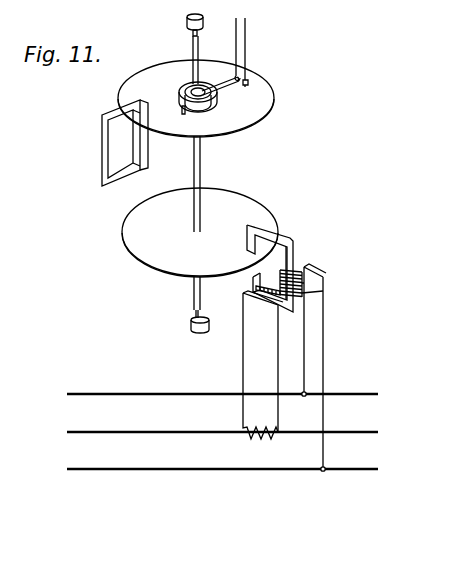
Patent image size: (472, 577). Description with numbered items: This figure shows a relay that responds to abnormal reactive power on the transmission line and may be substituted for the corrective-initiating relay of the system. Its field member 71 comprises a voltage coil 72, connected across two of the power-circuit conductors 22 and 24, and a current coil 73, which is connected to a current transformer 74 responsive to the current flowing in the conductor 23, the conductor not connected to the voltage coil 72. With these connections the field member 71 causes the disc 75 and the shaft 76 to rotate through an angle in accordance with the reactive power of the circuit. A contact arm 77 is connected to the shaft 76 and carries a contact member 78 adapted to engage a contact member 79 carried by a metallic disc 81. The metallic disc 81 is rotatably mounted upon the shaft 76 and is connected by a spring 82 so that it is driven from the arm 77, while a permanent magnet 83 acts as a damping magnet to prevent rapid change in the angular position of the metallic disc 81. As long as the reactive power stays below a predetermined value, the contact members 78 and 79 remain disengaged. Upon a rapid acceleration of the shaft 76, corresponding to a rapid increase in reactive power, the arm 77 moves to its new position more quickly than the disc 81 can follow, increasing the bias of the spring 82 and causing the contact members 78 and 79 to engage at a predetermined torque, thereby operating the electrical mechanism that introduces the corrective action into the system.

The power-circuit conductor 22 is at (350, 464).
The conductor 23 is at (350, 427).
The power-circuit conductor 24 is at (350, 389).
The field member 71 is at (294, 243).
The voltage coil 72 is at (303, 289).
The current coil 73 is at (269, 299).
The current transformer 74 is at (259, 426).
The disc 75 is at (163, 275).
The shaft 76 is at (201, 167).
The contact arm 77 is at (237, 84).
The contact member 78 is at (241, 79).
The contact member 79 is at (250, 83).
The metallic disc 81 is at (273, 103).
The spring 82 is at (180, 90).
The permanent magnet 83 is at (101, 147).